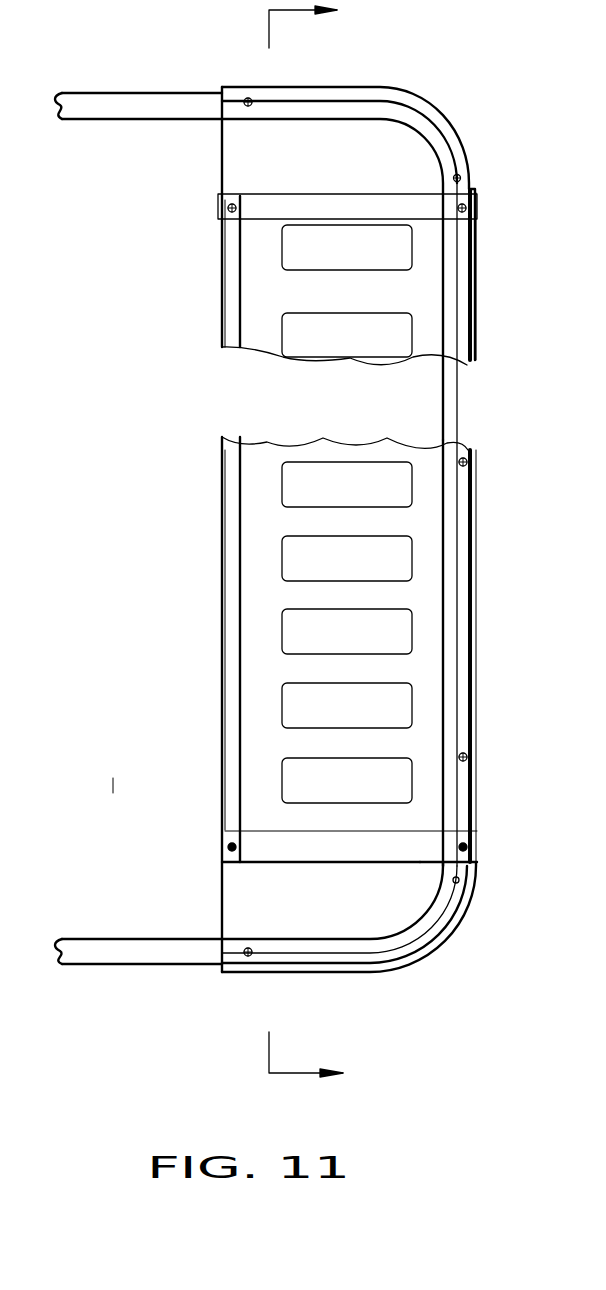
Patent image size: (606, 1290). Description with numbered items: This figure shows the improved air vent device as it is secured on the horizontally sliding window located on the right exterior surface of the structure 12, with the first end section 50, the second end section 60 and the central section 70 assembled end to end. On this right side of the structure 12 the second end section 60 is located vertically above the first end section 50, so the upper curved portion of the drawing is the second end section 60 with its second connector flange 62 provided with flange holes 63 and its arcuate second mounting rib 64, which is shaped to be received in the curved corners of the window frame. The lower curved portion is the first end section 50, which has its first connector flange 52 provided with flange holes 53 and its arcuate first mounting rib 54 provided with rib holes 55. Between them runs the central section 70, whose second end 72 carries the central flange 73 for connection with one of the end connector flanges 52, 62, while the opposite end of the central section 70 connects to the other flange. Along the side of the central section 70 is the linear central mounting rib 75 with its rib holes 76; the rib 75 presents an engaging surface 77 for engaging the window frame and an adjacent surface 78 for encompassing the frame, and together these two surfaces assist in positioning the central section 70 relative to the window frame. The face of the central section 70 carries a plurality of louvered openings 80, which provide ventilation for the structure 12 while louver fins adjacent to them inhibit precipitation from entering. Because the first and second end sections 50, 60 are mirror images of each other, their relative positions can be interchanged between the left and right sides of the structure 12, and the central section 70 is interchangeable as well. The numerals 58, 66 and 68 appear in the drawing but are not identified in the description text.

The structure 12 is at (345, 551).
The first end section 50 is at (357, 935).
The first connector flange 52 is at (232, 845).
The flange holes 53 is at (235, 849).
The first mounting rib 54 is at (428, 915).
The rib holes 55 is at (248, 956).
The lower outer curved panel 58 is at (345, 973).
The second end section 60 is at (222, 157).
The second connector flange 62 is at (257, 195).
The flange holes 63 is at (252, 199).
The second mounting rib 64 is at (430, 162).
The outer curved panel 66 is at (397, 122).
The middle curved panel 68 is at (435, 130).
The central section 70 is at (230, 470).
The second end 72 is at (258, 843).
The central flange 73 is at (422, 850).
The central mounting rib 75 is at (467, 630).
The rib holes 76 is at (472, 460).
The engaging surface 77 is at (463, 573).
The adjacent surface 78 is at (472, 503).
The louvered openings 80 is at (303, 563).